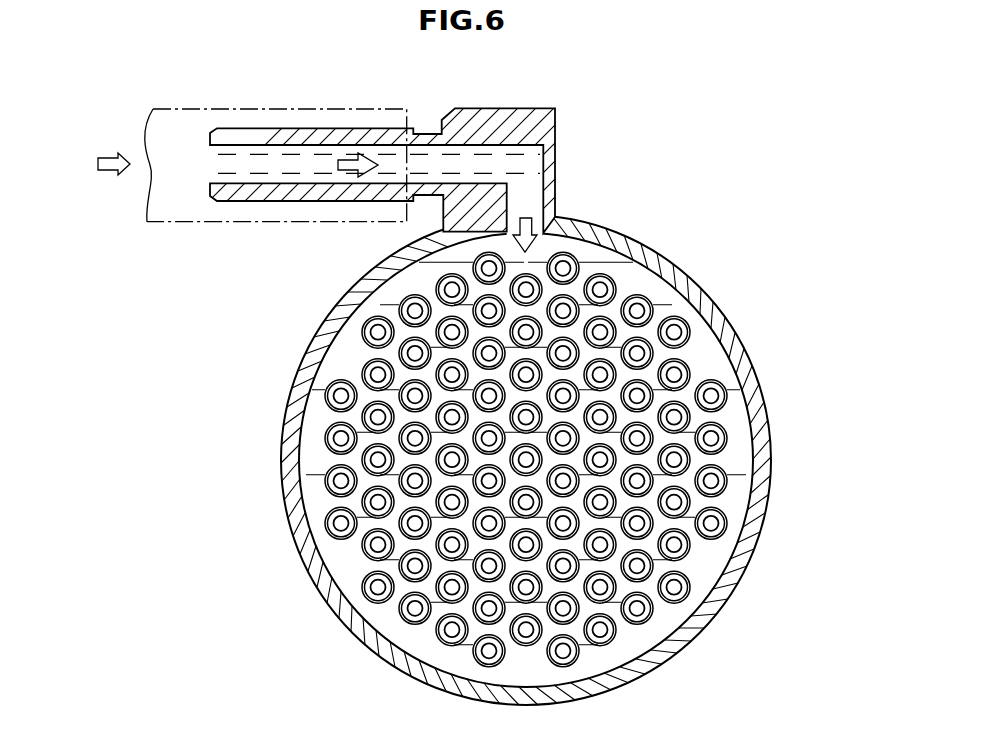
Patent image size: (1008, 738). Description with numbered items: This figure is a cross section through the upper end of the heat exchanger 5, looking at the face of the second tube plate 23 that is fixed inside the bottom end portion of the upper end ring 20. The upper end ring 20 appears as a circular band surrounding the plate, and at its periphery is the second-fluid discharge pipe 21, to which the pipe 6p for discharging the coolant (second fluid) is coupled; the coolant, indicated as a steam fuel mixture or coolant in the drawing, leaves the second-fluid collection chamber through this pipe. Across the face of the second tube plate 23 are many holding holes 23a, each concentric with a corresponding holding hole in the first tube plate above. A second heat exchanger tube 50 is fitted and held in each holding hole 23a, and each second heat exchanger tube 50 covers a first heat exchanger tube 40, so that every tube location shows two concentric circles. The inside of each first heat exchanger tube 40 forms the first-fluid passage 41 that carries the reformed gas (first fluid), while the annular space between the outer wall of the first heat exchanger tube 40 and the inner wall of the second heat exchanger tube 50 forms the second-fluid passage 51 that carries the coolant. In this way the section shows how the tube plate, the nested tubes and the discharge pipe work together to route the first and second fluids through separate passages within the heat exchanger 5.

The heat exchanger 5 is at (495, 406).
The upper end ring 20 is at (637, 240).
The second-fluid discharge pipe 21 is at (306, 196).
The second tube plate 23 is at (637, 637).
The holding hole 23a is at (690, 593).
The pipe for discharging the coolant 6p is at (213, 222).
The first heat exchanger tube 40 is at (222, 550).
The first-fluid passage 41 is at (780, 288).
The second heat exchanger tube 50 is at (331, 540).
The second-fluid passage 51 is at (681, 327).